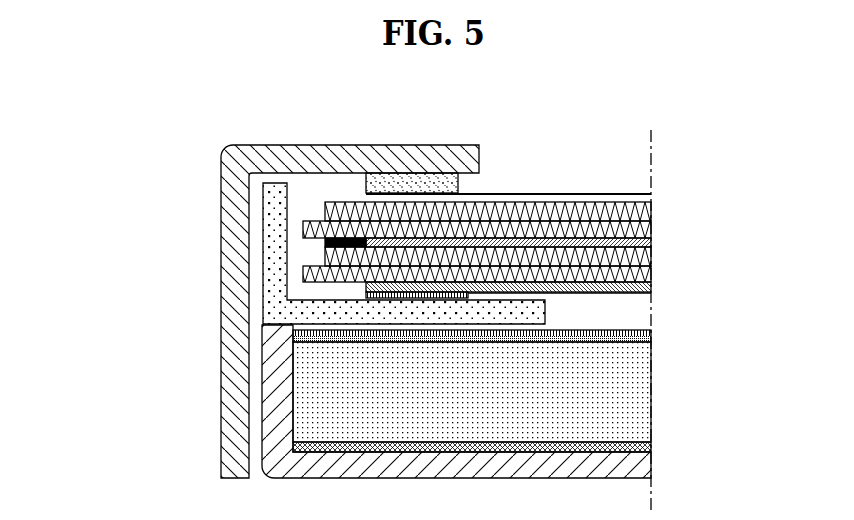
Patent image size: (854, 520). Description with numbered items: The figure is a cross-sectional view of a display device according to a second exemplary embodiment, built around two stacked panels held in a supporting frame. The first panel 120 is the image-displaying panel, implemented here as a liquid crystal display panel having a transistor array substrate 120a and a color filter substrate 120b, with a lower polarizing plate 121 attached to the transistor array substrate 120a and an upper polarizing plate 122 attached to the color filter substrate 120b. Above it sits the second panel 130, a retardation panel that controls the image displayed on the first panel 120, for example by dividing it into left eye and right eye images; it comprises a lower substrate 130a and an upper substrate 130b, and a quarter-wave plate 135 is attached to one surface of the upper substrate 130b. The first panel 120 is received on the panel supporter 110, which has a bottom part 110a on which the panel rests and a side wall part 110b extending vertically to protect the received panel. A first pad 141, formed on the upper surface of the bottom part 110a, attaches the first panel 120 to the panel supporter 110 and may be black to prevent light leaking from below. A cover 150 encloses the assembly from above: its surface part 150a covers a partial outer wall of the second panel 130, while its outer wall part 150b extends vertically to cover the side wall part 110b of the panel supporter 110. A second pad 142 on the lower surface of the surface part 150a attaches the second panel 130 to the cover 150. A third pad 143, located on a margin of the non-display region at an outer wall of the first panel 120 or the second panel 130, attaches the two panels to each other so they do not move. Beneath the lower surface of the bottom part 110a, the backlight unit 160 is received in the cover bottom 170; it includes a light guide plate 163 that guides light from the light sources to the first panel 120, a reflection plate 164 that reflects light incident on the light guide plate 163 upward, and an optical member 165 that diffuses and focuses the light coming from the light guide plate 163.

The panel supporter 110 is at (311, 277).
The bottom part 110a is at (335, 313).
The side wall part 110b is at (277, 272).
The first panel 120 is at (544, 267).
The transistor array substrate 120a is at (651, 271).
The color filter substrate 120b is at (651, 255).
The lower polarizing plate 121 is at (651, 285).
The upper polarizing plate 122 is at (651, 240).
The second panel 130 is at (544, 214).
The lower substrate 130a is at (651, 227).
The upper substrate 130b is at (651, 213).
The quarter-wave plate 135 is at (651, 195).
The first pad 141 is at (530, 293).
The second pad 142 is at (460, 183).
The third pad 143 is at (325, 242).
The cover 150 is at (278, 297).
The surface part 150a is at (287, 153).
The outer wall part 150b is at (235, 212).
The backlight unit 160 is at (535, 391).
The light guide plate 163 is at (651, 391).
The reflection plate 164 is at (510, 448).
The optical member 165 is at (653, 328).
The cover bottom 170 is at (651, 470).